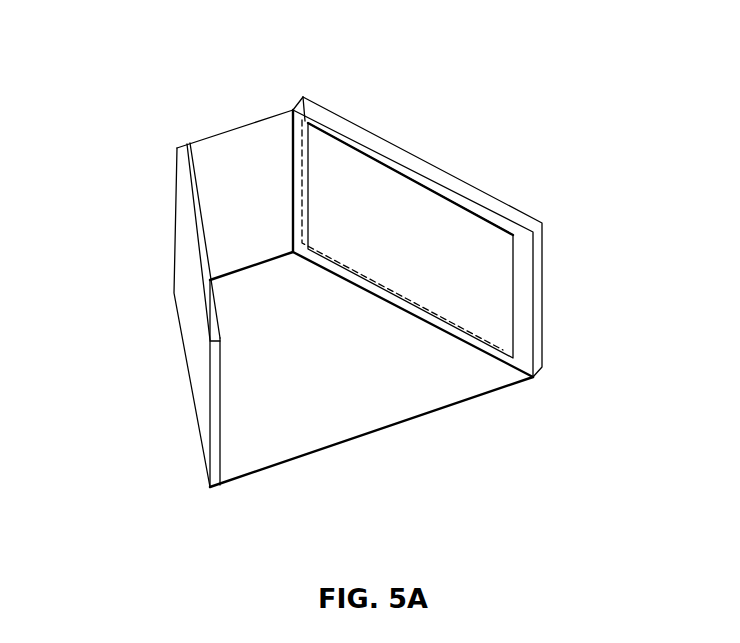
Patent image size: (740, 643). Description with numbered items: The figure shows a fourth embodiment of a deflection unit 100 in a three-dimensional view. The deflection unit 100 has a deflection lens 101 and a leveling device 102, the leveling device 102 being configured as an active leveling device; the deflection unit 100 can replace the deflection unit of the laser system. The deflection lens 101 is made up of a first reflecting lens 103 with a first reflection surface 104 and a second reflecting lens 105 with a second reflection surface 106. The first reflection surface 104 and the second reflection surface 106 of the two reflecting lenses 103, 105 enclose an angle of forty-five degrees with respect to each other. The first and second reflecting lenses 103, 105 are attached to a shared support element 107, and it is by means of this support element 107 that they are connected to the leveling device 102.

The deflection unit 100 is at (472, 127).
The deflection lens 101 is at (418, 431).
The leveling device 102 is at (150, 162).
The first reflecting lens 103 is at (535, 301).
The first reflection surface 104 is at (423, 275).
The second reflecting lens 105 is at (190, 327).
The second reflection surface 106 is at (220, 363).
The support element 107 is at (232, 152).